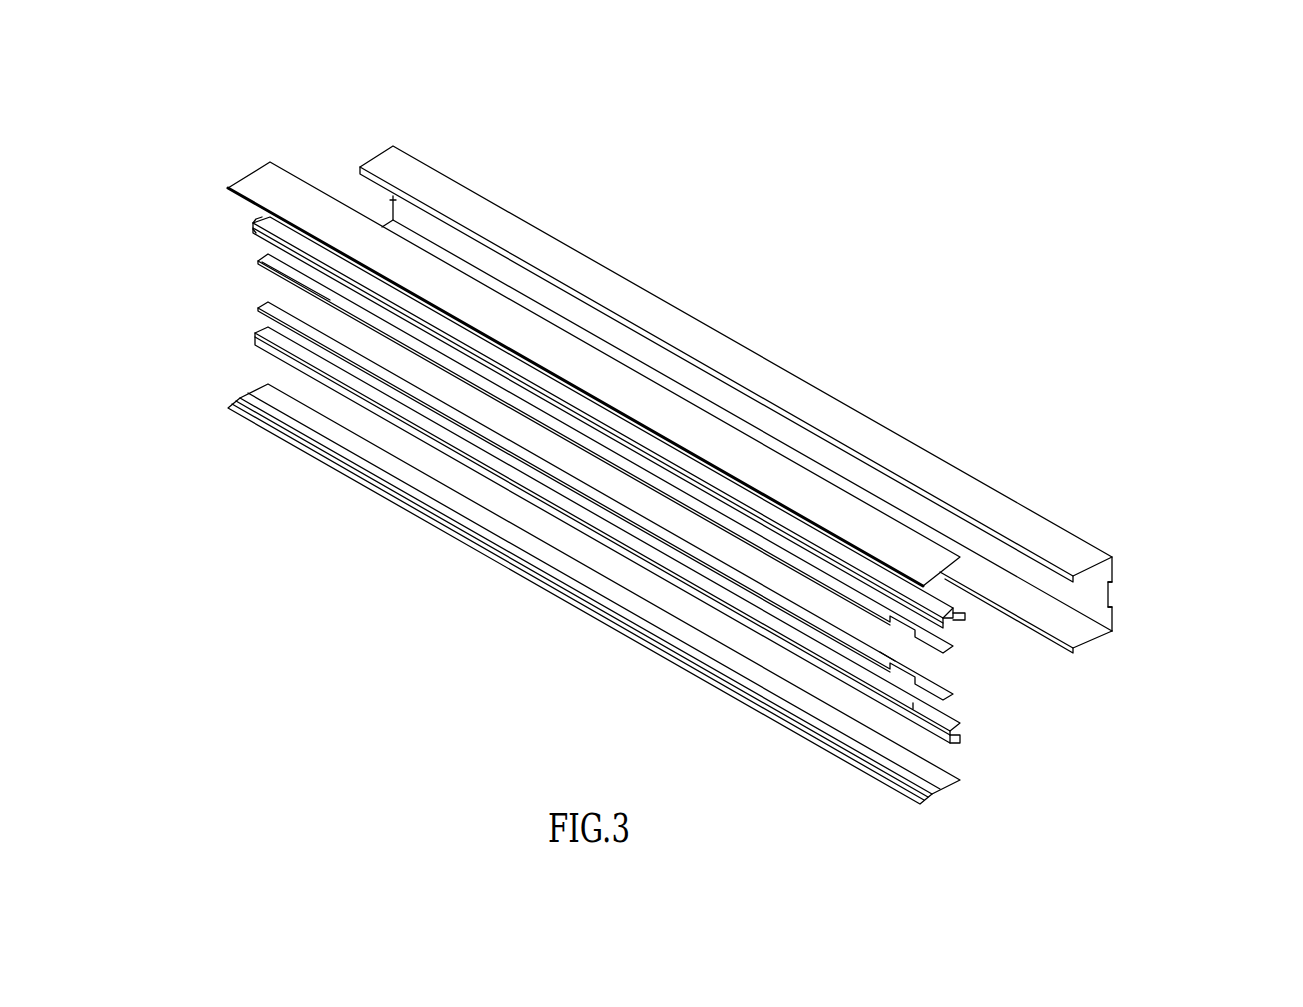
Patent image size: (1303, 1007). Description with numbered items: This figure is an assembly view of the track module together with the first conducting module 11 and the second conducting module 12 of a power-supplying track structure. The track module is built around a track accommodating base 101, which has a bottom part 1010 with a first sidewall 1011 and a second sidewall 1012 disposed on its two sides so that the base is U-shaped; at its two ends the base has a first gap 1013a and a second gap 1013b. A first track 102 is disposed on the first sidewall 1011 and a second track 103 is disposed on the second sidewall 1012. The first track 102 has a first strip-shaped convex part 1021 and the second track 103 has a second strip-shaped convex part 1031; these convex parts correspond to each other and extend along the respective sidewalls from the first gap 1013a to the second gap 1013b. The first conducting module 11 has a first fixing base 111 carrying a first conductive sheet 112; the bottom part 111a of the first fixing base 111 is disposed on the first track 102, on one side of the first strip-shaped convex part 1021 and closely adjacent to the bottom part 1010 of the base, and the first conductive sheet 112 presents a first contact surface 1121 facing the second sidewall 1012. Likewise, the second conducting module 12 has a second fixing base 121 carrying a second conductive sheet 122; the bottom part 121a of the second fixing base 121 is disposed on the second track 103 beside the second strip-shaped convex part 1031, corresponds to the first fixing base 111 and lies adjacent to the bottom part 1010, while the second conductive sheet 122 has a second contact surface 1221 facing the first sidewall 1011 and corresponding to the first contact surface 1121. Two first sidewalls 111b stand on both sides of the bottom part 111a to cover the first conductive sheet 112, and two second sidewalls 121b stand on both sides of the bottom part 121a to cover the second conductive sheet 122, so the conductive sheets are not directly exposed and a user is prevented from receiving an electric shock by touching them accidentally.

The track accommodating base 101 is at (766, 404).
The bottom part 1010 is at (1085, 590).
The first sidewall 1011 is at (1082, 637).
The second sidewall 1012 is at (360, 166).
The first gap 1013a is at (1098, 627).
The second gap 1013b is at (375, 205).
The second track 103 is at (933, 580).
The second strip-shaped convex part 1031 is at (960, 617).
The second conducting module 12 is at (555, 417).
The second fixing base 121 is at (558, 417).
The bottom part of the second fixing base 121a is at (256, 222).
The second sidewalls 121b is at (254, 232).
The second conductive sheet 122 is at (515, 453).
The second contact surface 1221 is at (330, 300).
The first conductive sheet 112 is at (605, 517).
The first contact surface 1121 is at (785, 595).
The first conducting module 11 is at (670, 596).
The first fixing base 111 is at (670, 596).
The bottom part of the first fixing base 111a is at (968, 746).
The first sidewalls 111b is at (925, 715).
The first track 102 is at (594, 595).
The first strip-shaped convex part 1021 is at (780, 705).